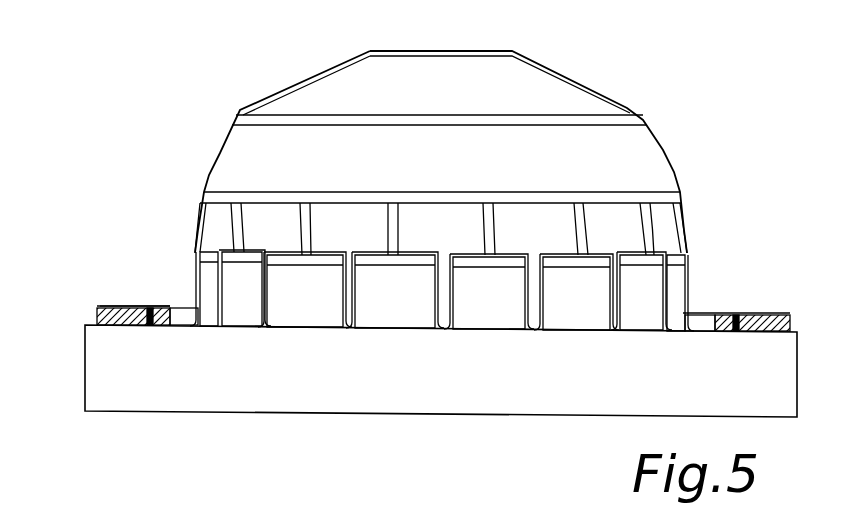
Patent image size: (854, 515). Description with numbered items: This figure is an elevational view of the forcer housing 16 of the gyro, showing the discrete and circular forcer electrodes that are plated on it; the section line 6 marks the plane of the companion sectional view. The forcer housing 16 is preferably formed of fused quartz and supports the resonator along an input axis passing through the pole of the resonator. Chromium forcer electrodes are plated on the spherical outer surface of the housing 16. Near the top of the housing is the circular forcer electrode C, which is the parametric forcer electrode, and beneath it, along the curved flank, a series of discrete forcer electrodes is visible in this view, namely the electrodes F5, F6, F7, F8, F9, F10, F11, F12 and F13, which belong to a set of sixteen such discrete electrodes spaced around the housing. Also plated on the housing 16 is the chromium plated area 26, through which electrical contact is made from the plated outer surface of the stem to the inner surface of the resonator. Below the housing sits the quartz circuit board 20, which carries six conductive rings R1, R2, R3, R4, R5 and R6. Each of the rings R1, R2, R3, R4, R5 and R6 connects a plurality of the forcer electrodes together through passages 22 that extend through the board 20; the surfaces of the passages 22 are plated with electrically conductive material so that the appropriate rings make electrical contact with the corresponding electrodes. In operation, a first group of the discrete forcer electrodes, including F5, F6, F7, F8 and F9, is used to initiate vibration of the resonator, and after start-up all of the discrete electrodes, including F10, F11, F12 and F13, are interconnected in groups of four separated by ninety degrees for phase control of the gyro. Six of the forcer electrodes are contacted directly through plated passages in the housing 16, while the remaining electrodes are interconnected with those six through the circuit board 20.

The section line 6- 6 is at (77, 20).
The forcer housing 16 is at (345, 73).
The quartz circuit board 20 is at (97, 316).
The passages 22 is at (137, 323).
The chromium plated area 26 is at (540, 64).
The circular forcer electrode C is at (652, 155).
The discrete forcer electrode F5 is at (685, 220).
The discrete forcer electrode F6 is at (657, 213).
The discrete forcer electrode F7 is at (600, 212).
The discrete forcer electrode F8 is at (525, 212).
The discrete forcer electrode F9 is at (440, 213).
The discrete forcer electrode F10 is at (350, 212).
The discrete forcer electrode F11 is at (287, 210).
The discrete forcer electrode F12 is at (230, 212).
The discrete forcer electrode F13 is at (198, 223).
The conductive ring R1 is at (107, 306).
The conductive ring R2 is at (123, 306).
The conductive ring R3 is at (138, 306).
The conductive ring R4 is at (150, 306).
The conductive ring R5 is at (157, 306).
The conductive ring R6 is at (163, 306).